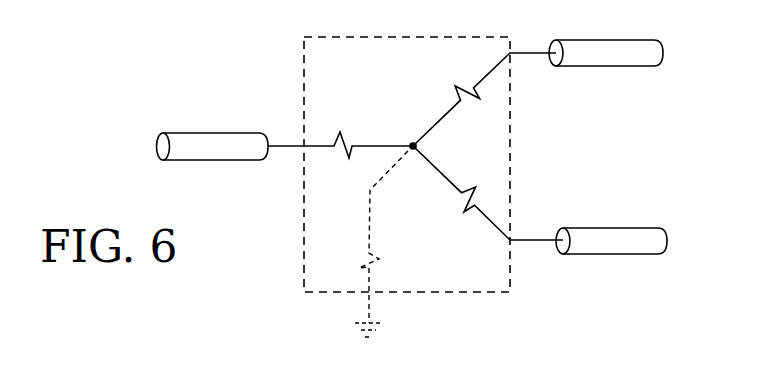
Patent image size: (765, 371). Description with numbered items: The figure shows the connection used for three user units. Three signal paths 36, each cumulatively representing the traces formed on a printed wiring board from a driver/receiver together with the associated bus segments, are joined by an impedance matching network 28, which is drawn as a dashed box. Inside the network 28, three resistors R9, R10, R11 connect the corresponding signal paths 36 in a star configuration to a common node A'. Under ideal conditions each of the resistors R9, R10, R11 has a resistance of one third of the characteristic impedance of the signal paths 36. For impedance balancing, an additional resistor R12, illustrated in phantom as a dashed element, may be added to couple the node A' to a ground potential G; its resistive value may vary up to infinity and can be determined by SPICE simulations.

The impedance matching network 28 is at (470, 37).
The signal paths 36 is at (211, 133).
The resistor R9 is at (340, 129).
The resistor R10 is at (483, 99).
The resistor R11 is at (488, 193).
The resistor R12 is at (394, 237).
The node A' is at (447, 148).
The ground potential G is at (382, 331).